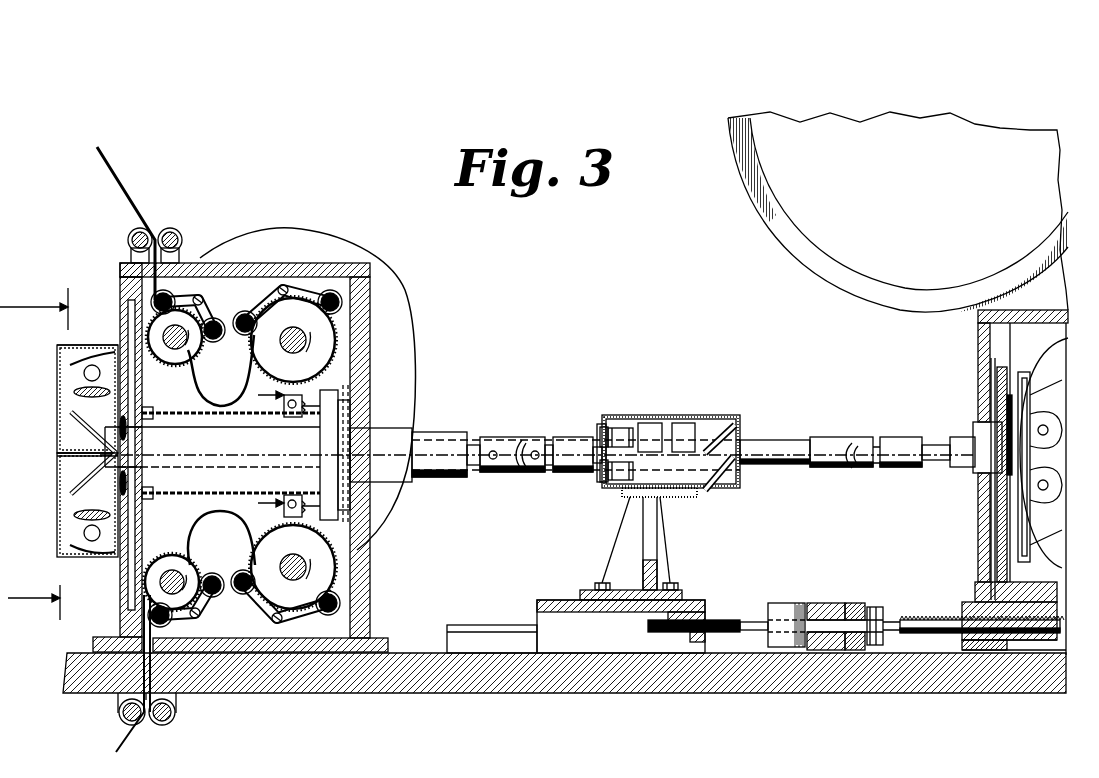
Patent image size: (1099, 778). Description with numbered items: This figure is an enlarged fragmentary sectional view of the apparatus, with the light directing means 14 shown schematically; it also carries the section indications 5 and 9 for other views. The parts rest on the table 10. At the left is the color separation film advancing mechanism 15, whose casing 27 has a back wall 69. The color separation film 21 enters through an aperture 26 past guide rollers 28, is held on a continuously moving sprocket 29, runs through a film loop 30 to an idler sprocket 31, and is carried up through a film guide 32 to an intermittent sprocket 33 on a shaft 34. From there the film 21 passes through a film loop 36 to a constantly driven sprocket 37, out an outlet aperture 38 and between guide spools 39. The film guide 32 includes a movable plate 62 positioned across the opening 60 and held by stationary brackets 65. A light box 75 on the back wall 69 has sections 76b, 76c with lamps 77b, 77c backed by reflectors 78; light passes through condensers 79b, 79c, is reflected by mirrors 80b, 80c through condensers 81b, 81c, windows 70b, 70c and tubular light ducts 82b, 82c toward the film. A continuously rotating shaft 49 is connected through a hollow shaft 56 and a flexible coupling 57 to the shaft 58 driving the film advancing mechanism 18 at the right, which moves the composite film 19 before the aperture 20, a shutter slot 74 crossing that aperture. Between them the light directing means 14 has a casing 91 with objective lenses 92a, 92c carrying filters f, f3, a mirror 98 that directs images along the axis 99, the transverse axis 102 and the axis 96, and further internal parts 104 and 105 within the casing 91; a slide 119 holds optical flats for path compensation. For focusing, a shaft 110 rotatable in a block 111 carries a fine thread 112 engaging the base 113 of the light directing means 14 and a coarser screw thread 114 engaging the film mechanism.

The table 10 is at (648, 672).
The light directing means 14 is at (640, 418).
The color separation film advancing mechanism 15 is at (292, 255).
The film advancing mechanism 18 is at (1000, 400).
The film 19 is at (1065, 352).
The aperture 20 is at (988, 462).
The color separation film 21 is at (122, 183).
The aperture 26 is at (153, 673).
The casing 27 is at (243, 625).
The guide rollers 28 is at (121, 723).
The continuously moving sprocket 29 is at (172, 560).
The film loop 30 is at (220, 516).
The idler sprocket 31 is at (291, 592).
The film guide 32 is at (375, 425).
The intermittent sprocket 33 is at (300, 312).
The shaft 34 is at (338, 316).
The film loop 36 is at (250, 389).
The constantly driven sprocket 37 is at (196, 296).
The outlet aperture 38 is at (132, 270).
The guide spools 39 is at (137, 229).
The shaft 49 is at (468, 434).
The hollow shaft 56 is at (778, 452).
The flexible coupling 57 is at (898, 444).
The shaft 58 is at (935, 448).
The opening 60 is at (370, 424).
The movable plate 62 is at (343, 406).
The stationary brackets 65 is at (300, 400).
The back wall 69 is at (133, 285).
The window 70b is at (152, 413).
The window 70c is at (152, 486).
The slot 74 is at (983, 366).
The light box 75 is at (55, 341).
The section 76b is at (75, 343).
The section 76c is at (60, 557).
The lamp 77b is at (83, 372).
The lamp 77c is at (83, 534).
The reflectors 78 is at (96, 348).
The condenser 79b is at (80, 392).
The condenser 79c is at (75, 515).
The diagonal mirror 80b is at (72, 413).
The mirror 80c is at (72, 492).
The condenser 81b is at (143, 431).
The condenser 81c is at (143, 465).
The tubular light duct 82b is at (200, 420).
The tubular light duct 82c is at (228, 493).
The casing 91 is at (632, 497).
The objective lens 92a is at (615, 427).
The objective lens 92c is at (608, 482).
The axis 96 is at (655, 424).
The mirror 98 is at (723, 437).
The axis 99 is at (763, 440).
The transverse axis 102 is at (755, 464).
The block 104 is at (688, 425).
The contact arm 105 is at (710, 492).
The shaft 110 is at (850, 622).
The block 111 is at (820, 608).
The thread 112 is at (765, 626).
The base 113 is at (702, 612).
The screw thread 114 is at (935, 640).
The slide 119 is at (660, 497).
The filter f is at (606, 430).
The filter f3 is at (606, 470).
The section line 5 is at (262, 444).
The section line 9 is at (34, 451).